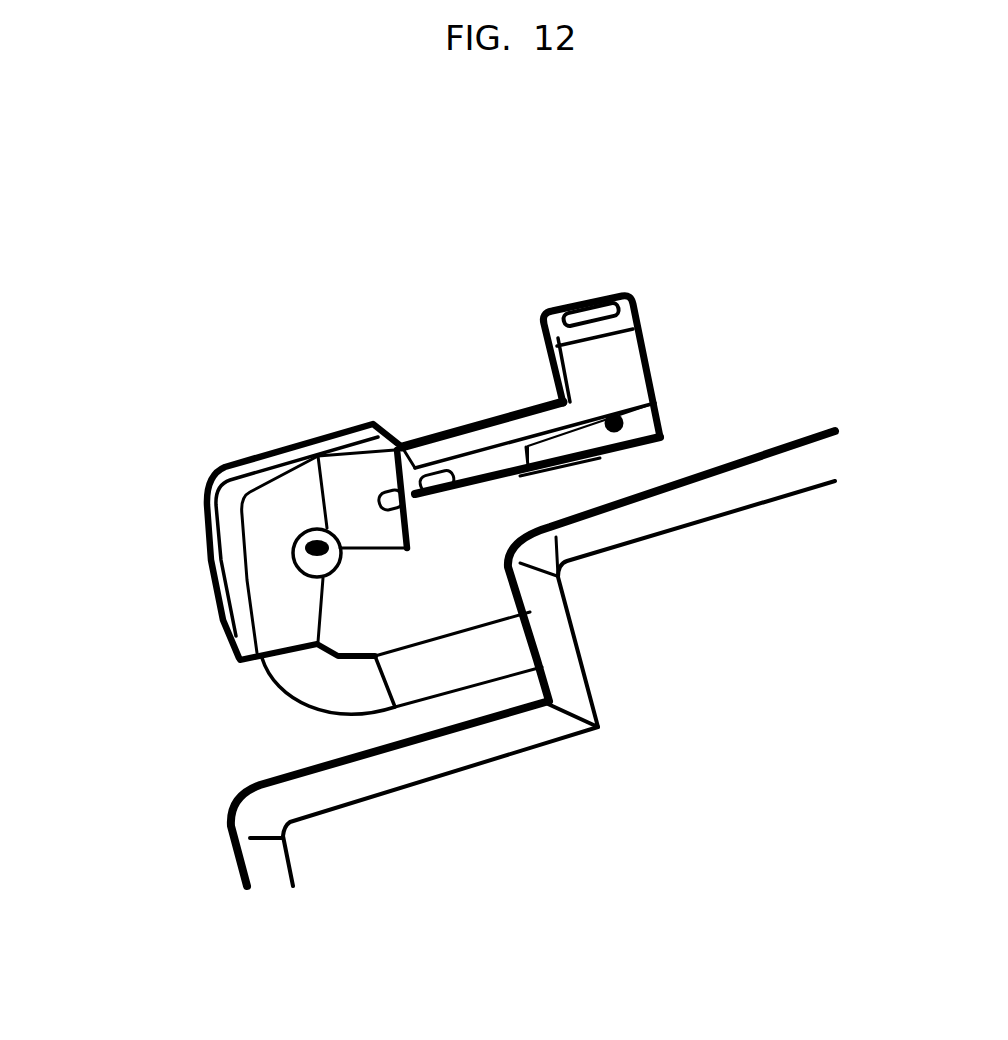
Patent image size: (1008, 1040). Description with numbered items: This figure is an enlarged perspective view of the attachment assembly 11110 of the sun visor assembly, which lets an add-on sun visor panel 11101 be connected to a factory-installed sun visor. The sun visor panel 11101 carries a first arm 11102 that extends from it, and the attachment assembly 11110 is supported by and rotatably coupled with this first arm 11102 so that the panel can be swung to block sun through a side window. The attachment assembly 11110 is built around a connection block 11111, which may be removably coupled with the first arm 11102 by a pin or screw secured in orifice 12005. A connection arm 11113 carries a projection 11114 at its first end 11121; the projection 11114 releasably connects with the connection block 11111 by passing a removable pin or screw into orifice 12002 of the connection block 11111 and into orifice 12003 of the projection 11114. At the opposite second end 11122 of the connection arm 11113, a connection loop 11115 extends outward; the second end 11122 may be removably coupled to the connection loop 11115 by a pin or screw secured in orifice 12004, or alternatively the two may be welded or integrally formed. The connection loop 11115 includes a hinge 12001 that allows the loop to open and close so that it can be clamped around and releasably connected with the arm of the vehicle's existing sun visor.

The sun visor panel 11101 is at (233, 813).
The first arm 11102 is at (395, 708).
The attachment assembly 11110 is at (164, 245).
The connection block 11111 is at (376, 586).
The connection arm 11113 is at (545, 477).
The projection 11114 is at (586, 521).
The connection loop 11115 is at (640, 290).
The first end 11121 is at (420, 443).
The second end 11122 is at (711, 438).
The hinge 12001 is at (583, 307).
The orifice 12002 is at (397, 518).
The orifice 12003 is at (463, 482).
The orifice 12004 is at (628, 429).
The orifice 12005 is at (289, 560).